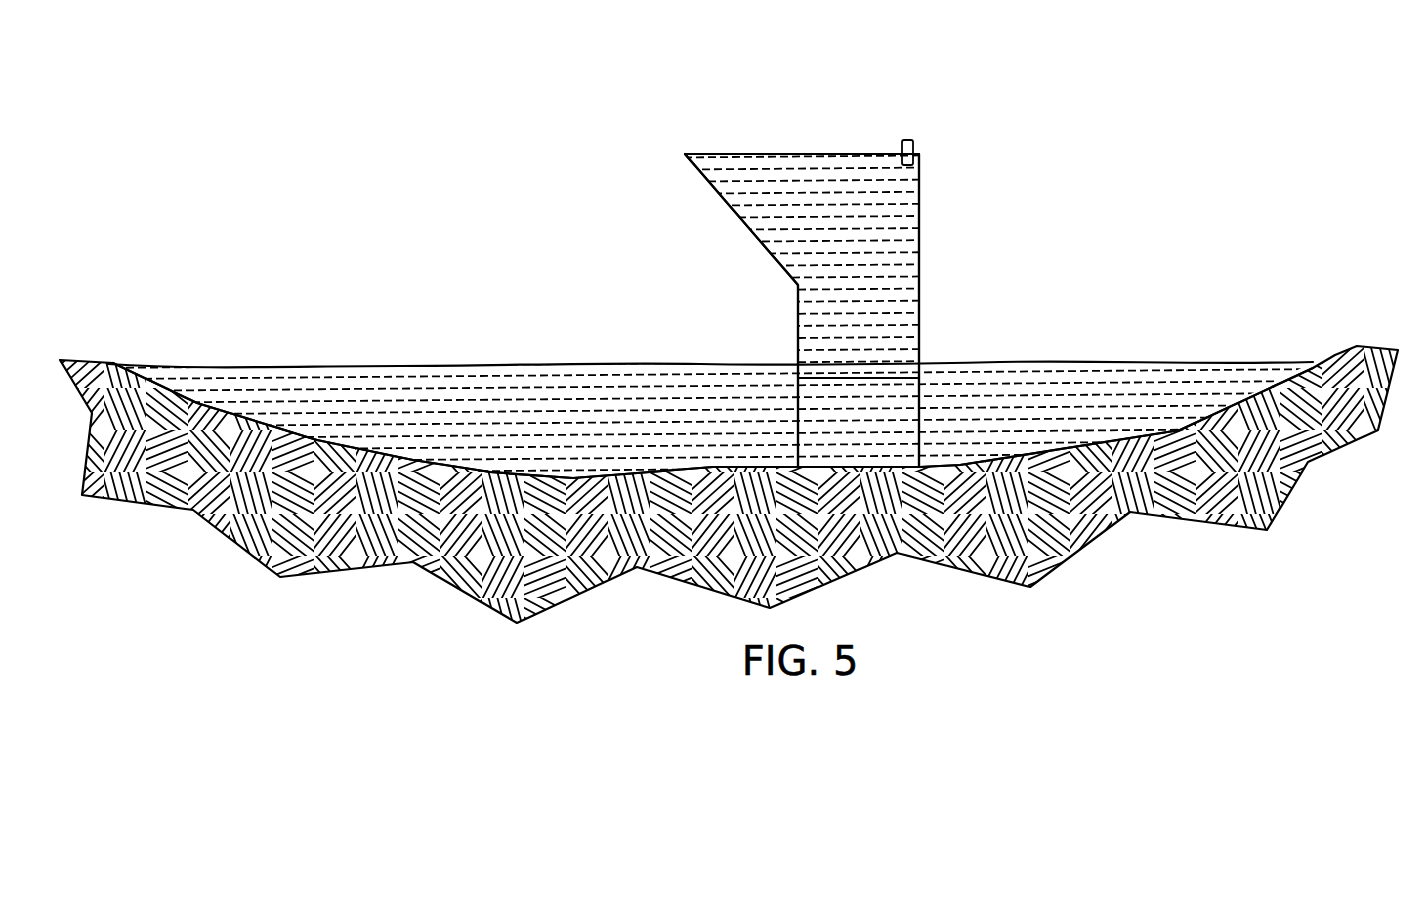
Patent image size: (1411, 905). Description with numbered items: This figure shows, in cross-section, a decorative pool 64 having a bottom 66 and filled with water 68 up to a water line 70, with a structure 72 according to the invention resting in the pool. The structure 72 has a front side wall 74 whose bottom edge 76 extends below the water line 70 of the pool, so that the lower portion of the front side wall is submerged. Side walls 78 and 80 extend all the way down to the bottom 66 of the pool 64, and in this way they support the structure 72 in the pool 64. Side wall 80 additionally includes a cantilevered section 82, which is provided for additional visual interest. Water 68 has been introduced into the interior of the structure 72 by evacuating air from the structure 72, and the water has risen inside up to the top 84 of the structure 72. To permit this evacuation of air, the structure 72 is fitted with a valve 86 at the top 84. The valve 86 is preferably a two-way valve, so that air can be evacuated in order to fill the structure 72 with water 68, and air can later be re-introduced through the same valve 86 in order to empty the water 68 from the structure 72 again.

The decorative pool 64 is at (1297, 329).
The bottom 66 is at (489, 474).
The water 68 is at (578, 431).
The water line 70 is at (528, 365).
The structure 72 is at (827, 241).
The front side wall 74 is at (846, 279).
The bottom edge 76 is at (908, 381).
The side wall 78 is at (920, 224).
The side wall 80 is at (797, 318).
The cantilevered section 82 is at (732, 217).
The top 84 is at (824, 153).
The valve 86 is at (908, 139).